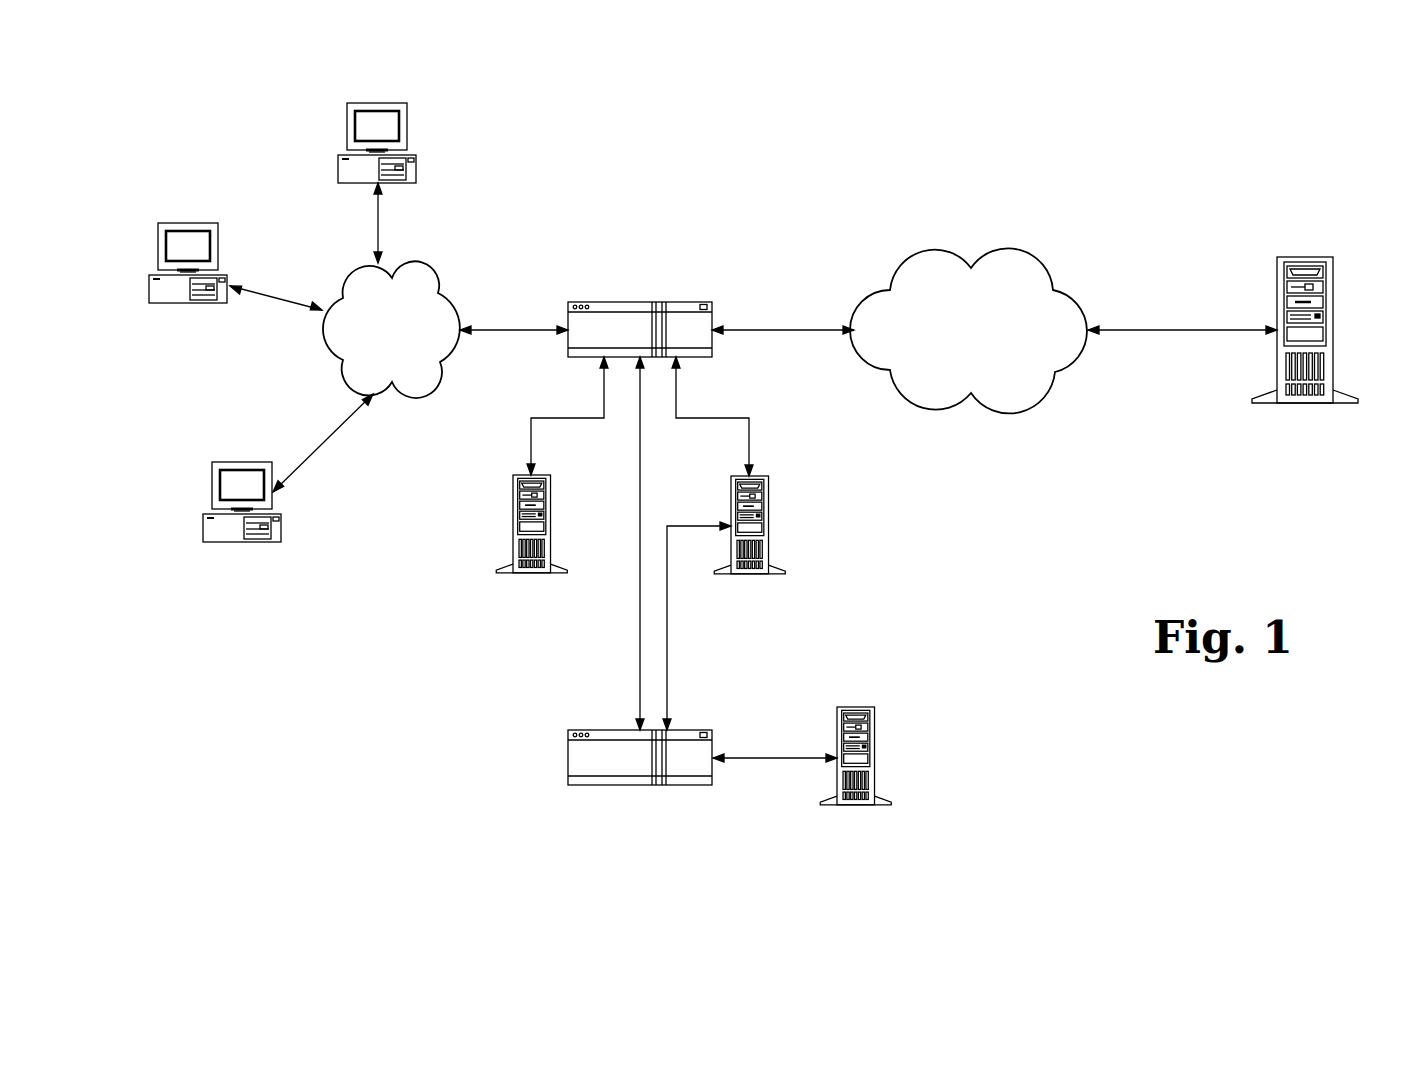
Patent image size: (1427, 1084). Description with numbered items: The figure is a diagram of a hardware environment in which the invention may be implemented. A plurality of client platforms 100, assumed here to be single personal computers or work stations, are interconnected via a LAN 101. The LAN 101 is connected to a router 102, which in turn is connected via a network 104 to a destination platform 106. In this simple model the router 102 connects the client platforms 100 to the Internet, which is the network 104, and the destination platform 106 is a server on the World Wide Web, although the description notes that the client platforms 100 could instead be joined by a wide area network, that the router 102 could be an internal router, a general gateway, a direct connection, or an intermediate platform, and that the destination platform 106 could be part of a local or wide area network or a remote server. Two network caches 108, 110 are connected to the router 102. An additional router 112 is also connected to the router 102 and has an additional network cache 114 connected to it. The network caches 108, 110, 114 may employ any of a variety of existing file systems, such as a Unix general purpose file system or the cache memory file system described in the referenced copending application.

The client platform 100 is at (392, 103).
The LAN 101 is at (437, 282).
The router 102 is at (690, 302).
The network 104 is at (922, 251).
The destination platform 106 is at (1322, 257).
The network cache 108 is at (511, 500).
The network cache 110 is at (769, 512).
The additional router 112 is at (597, 730).
The additional network cache 114 is at (877, 730).